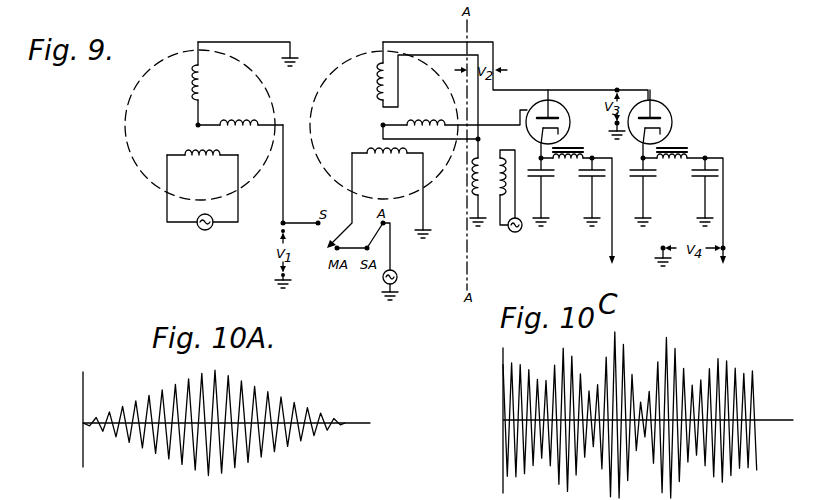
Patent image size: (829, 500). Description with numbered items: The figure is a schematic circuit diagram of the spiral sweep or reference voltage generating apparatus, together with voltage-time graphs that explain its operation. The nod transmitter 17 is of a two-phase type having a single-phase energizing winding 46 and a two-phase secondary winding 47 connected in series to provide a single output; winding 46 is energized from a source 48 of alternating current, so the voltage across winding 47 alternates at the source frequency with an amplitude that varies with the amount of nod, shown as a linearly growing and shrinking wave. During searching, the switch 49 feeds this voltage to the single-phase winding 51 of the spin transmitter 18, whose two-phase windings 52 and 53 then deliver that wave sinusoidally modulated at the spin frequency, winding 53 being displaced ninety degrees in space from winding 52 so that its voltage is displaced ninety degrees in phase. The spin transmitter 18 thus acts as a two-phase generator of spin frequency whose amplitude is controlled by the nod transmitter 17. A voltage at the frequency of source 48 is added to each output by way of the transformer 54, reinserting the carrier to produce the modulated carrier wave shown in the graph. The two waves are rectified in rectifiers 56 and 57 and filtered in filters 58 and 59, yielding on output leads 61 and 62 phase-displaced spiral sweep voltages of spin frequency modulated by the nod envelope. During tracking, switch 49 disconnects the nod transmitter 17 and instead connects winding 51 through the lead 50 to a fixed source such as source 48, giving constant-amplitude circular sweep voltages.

The nod transmitter 17 is at (125, 125).
The spin transmitter 18 is at (350, 62).
The single-phase energizing winding 46 is at (185, 152).
The two-phase secondary winding 47 is at (222, 121).
The source of alternating current 48 is at (205, 231).
The switch 49 is at (346, 229).
The lead 50 is at (393, 250).
The single-phase winding 51 is at (367, 151).
The two-phase winding 52 is at (378, 89).
The two-phase winding 53 is at (414, 120).
The transformer 54 is at (486, 161).
The rectifier 56 is at (565, 116).
The rectifier 57 is at (672, 123).
The filter 58 is at (566, 187).
The filter 59 is at (674, 187).
The output lead 61 is at (613, 255).
The output lead 62 is at (727, 255).